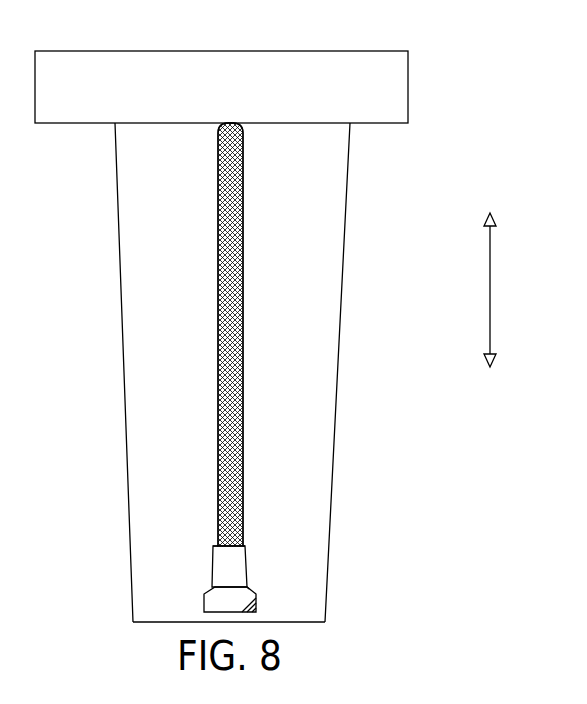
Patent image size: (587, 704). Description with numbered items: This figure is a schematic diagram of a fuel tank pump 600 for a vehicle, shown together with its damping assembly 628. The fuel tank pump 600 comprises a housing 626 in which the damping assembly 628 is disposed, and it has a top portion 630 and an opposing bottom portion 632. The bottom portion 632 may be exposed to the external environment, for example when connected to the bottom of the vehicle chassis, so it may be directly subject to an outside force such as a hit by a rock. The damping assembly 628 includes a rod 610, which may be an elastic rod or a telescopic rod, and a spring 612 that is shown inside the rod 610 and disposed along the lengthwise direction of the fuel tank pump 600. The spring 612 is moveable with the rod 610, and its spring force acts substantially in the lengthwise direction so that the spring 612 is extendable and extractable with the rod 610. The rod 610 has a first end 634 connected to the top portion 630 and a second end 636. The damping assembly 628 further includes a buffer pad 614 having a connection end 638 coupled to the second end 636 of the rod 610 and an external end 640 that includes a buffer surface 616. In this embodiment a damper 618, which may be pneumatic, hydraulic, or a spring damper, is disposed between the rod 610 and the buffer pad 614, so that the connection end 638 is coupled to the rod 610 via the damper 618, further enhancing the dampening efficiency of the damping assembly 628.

The fuel tank pump 600 is at (481, 67).
The rod 610 is at (228, 334).
The spring 612 is at (218, 198).
The buffer pad 614 is at (254, 585).
The buffer surface 616 is at (250, 606).
The damper 618 is at (250, 541).
The housing 626 is at (348, 322).
The damping assembly 628 is at (250, 207).
The top portion 630 is at (250, 108).
The bottom portion 632 is at (303, 622).
The first end 634 is at (219, 129).
The second end 636 is at (215, 547).
The connection end 638 is at (222, 561).
The external end 640 is at (210, 611).